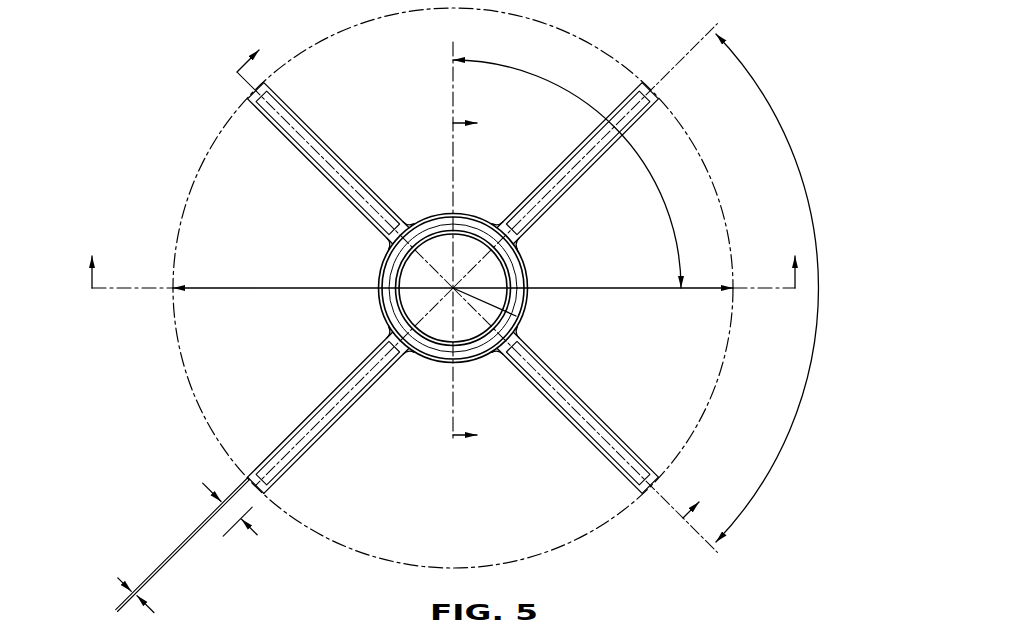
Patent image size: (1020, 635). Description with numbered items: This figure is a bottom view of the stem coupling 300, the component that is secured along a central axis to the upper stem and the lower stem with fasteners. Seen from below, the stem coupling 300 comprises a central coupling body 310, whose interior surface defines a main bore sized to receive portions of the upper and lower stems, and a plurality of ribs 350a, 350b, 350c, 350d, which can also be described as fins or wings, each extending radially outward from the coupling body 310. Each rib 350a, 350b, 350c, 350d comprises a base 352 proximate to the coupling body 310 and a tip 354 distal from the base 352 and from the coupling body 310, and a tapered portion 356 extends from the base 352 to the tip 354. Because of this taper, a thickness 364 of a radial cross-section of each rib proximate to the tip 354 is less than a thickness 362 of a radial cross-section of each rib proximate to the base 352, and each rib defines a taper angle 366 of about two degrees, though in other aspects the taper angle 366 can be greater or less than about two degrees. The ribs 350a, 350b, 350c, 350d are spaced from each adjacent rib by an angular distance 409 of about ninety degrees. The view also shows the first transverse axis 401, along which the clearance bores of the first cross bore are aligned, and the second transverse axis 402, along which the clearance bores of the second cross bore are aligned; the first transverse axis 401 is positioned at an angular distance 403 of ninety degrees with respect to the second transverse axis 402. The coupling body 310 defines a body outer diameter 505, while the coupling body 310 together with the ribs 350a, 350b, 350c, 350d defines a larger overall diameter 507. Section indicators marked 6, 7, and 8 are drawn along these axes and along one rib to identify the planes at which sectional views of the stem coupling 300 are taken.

The stem coupling 300 is at (182, 88).
The coupling body 310 is at (378, 278).
The rib 350a is at (634, 448).
The rib 350b is at (605, 158).
The rib 350c is at (341, 160).
The rib 350d is at (299, 447).
The base 352 is at (398, 343).
The tip 354 is at (256, 485).
The tapered portion 356 is at (320, 404).
The thickness 362 is at (336, 420).
The thickness 364 is at (227, 511).
The taper angle 366 is at (183, 545).
The first transverse axis 401 is at (450, 167).
The second transverse axis 402 is at (150, 287).
The angular distance 403 is at (577, 96).
The angular distance 409 is at (819, 278).
The body outer diameter 505 is at (470, 302).
The overall diameter 507 is at (266, 287).
The section line 6- 6 is at (474, 281).
The section line 7- 7 is at (442, 259).
The section line 8- 8 is at (477, 277).